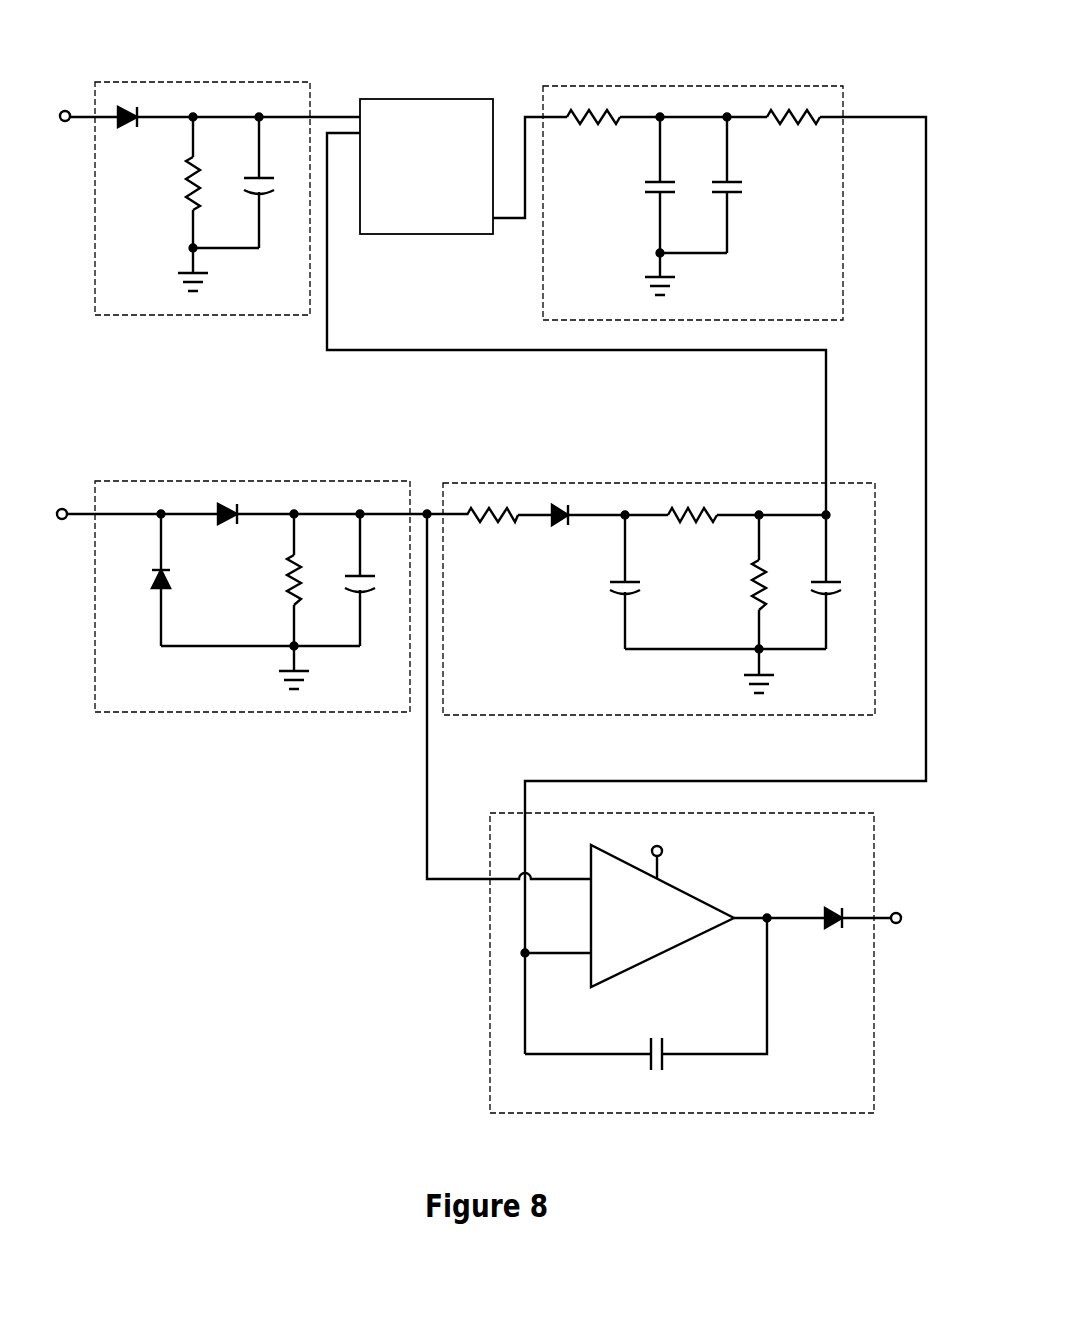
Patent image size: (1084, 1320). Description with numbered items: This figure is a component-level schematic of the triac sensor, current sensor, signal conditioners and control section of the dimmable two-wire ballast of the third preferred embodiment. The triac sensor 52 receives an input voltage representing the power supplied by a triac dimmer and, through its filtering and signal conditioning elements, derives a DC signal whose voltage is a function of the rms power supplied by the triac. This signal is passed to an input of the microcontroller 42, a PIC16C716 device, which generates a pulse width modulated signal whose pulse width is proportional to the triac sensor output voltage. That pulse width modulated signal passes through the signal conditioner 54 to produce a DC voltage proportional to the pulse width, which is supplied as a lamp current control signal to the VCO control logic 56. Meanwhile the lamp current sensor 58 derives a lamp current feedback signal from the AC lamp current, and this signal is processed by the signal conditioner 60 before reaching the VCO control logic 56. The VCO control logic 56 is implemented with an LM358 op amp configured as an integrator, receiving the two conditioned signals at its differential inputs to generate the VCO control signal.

The triac sensor 52 is at (202, 82).
The microcontroller 42 is at (425, 99).
The signal conditioner 54 is at (693, 86).
The lamp current sensor 58 is at (253, 481).
The lamp current signal conditioner 60 is at (660, 483).
The VCO control logic 56 is at (489, 960).